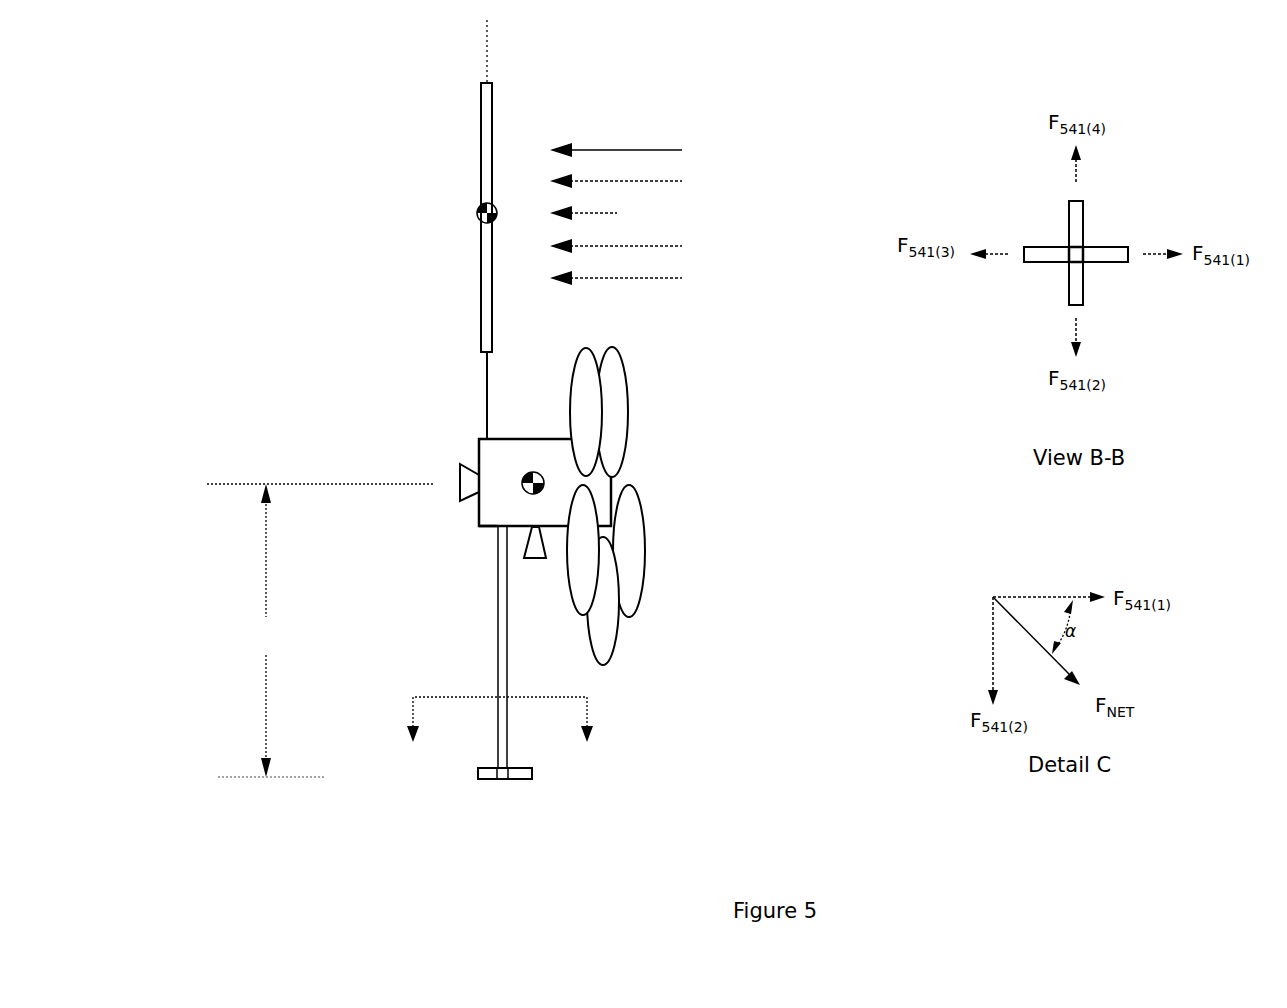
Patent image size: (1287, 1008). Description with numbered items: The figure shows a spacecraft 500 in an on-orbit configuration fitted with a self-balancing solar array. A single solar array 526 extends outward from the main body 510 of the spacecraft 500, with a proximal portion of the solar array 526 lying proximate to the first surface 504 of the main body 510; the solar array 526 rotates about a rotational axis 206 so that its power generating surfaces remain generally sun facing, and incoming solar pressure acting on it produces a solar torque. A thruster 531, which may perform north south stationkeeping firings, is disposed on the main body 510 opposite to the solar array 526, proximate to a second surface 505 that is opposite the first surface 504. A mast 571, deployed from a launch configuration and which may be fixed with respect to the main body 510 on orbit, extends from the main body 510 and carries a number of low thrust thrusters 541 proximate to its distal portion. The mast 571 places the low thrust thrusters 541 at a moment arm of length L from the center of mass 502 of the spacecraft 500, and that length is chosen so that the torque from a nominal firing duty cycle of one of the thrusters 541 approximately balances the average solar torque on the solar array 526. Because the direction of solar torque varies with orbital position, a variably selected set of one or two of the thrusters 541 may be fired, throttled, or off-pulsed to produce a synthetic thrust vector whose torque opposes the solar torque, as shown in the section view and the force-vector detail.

The spacecraft 500 is at (240, 32).
The rotational axis 206 is at (487, 45).
The solar array 526 is at (480, 130).
The first surface 504 is at (511, 439).
The main body 510 is at (479, 452).
The center of mass 502 is at (522, 478).
The second surface 505 is at (484, 528).
The mast 571 is at (496, 613).
The thruster 531 is at (542, 560).
The low thrust thrusters 541 is at (479, 770).